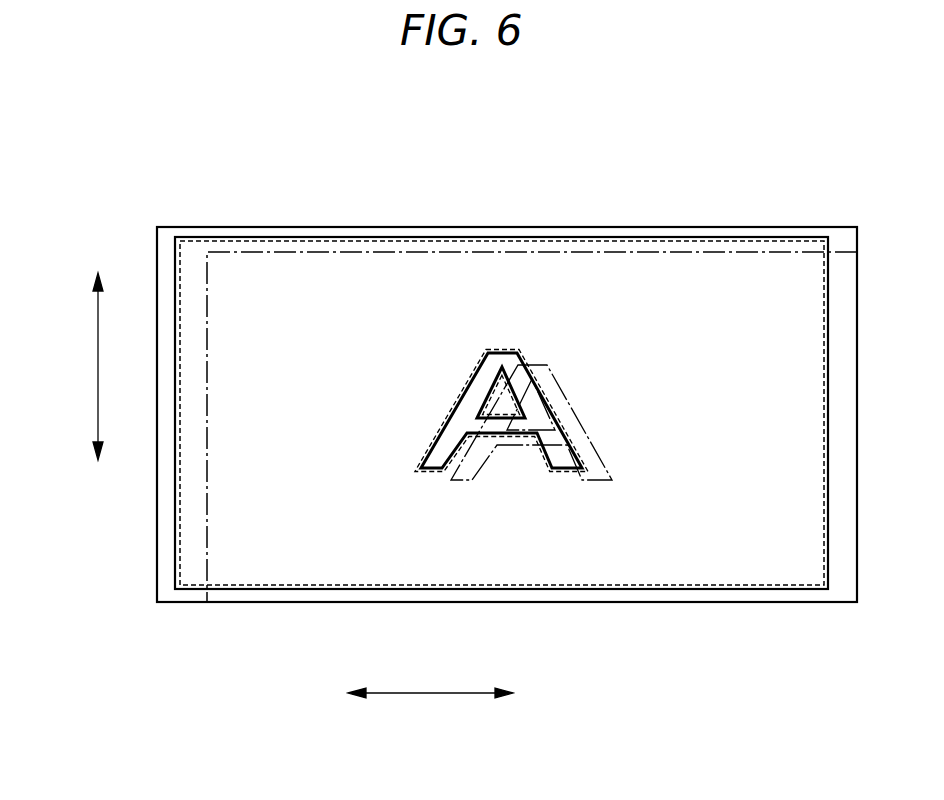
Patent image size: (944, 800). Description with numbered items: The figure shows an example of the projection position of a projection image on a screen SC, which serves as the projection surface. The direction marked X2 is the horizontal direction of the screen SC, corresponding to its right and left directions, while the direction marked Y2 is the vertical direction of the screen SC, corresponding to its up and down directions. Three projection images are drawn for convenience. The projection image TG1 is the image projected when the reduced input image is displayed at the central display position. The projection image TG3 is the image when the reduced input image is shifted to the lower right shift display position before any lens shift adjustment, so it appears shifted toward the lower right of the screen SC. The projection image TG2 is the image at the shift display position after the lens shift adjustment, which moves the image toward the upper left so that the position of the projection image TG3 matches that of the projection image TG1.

The screen SC is at (168, 226).
The projection image TG1 is at (252, 237).
The projection image TG2 is at (457, 240).
The projection image TG3 is at (672, 250).
The vertical direction Y2 is at (98, 353).
The horizontal direction X2 is at (428, 693).